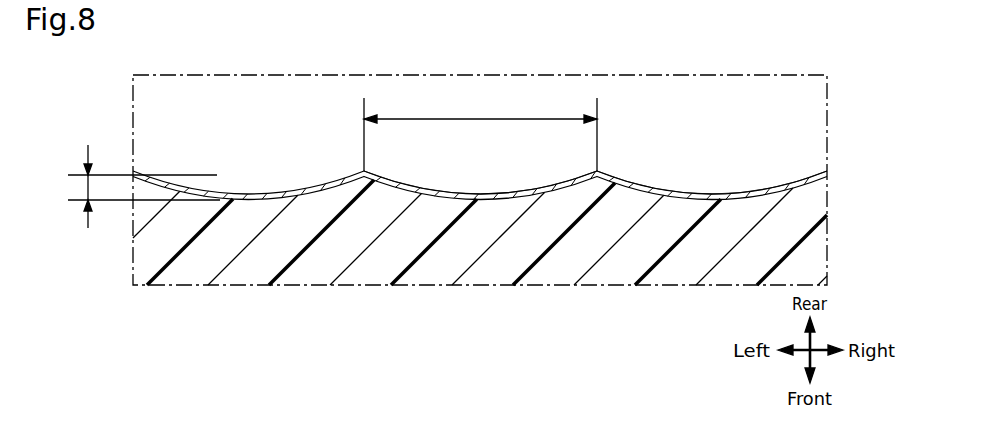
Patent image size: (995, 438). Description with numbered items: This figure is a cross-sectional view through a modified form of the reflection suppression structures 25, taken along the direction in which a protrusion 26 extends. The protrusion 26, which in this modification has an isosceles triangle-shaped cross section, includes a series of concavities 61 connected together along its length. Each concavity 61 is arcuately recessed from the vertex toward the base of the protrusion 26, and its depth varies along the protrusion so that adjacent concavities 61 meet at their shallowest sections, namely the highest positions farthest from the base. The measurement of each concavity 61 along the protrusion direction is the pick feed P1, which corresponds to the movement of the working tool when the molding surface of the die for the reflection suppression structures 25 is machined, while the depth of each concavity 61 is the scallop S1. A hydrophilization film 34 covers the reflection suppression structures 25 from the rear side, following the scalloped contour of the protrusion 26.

The reflection suppression structure 25 is at (250, 142).
The protrusion 26 is at (143, 258).
The hydrophilization film 34 is at (824, 172).
The concavity 61 is at (450, 195).
The scallop S1 is at (88, 190).
The pick feed P1 is at (480, 119).